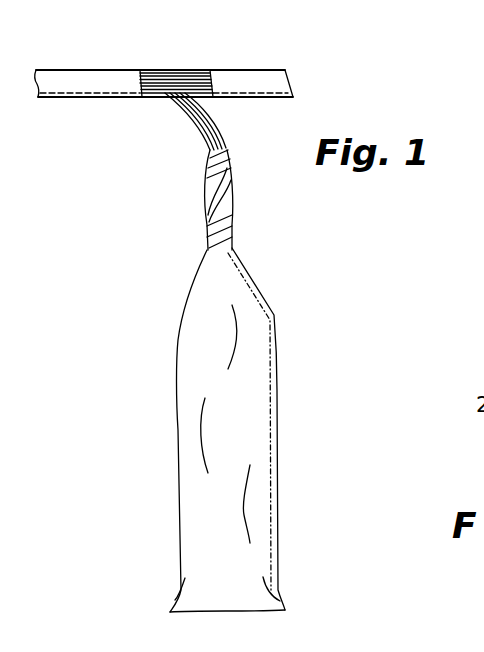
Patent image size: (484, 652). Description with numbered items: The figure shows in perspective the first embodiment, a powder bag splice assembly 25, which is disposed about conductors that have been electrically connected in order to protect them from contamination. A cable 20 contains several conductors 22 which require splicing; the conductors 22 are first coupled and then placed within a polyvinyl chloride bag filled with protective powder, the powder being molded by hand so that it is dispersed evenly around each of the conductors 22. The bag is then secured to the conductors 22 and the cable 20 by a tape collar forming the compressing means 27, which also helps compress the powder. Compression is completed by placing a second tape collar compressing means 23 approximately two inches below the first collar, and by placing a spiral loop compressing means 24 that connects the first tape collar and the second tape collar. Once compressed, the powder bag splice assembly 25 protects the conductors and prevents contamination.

The cable 20 is at (258, 70).
The conductors 22 is at (223, 131).
The compressing means (first tape collar) 27 is at (209, 164).
The compressing means (spiral loop) 24 is at (223, 190).
The compressing means (second tape collar) 23 is at (228, 236).
The powder bag splice assembly 25 is at (282, 370).